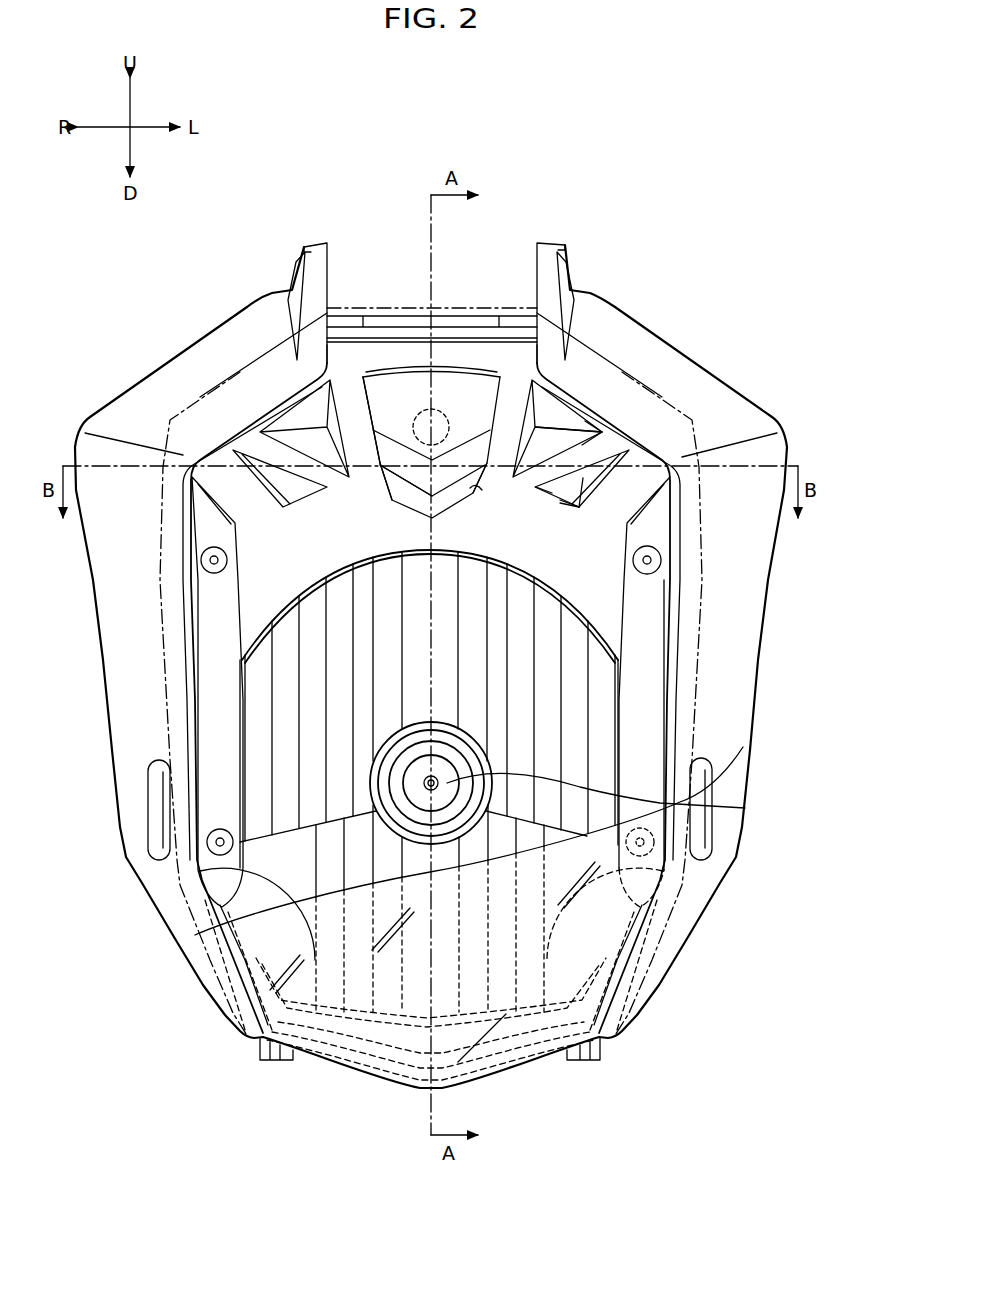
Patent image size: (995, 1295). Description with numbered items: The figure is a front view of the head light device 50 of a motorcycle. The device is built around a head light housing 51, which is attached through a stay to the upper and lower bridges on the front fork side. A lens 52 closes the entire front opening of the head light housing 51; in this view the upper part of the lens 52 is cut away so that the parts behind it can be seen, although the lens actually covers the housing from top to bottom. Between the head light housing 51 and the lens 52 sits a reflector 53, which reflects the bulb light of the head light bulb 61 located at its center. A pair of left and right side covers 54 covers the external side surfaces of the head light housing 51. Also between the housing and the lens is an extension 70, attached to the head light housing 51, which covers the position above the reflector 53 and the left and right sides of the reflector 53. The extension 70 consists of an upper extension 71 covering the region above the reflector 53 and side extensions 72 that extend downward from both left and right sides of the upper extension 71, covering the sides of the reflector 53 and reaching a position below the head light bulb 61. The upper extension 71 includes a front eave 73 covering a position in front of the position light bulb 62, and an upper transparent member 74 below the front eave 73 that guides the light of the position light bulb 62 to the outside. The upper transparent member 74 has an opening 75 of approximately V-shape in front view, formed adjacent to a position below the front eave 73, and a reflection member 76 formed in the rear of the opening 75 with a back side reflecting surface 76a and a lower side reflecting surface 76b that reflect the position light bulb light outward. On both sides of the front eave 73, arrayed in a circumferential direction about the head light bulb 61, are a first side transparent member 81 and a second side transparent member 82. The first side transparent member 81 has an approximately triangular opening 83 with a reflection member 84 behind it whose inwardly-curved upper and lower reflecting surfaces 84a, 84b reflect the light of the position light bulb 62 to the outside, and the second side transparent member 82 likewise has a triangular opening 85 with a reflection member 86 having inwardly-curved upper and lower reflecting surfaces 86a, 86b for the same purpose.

The head light device 50 is at (622, 232).
The head light housing 51 is at (523, 1010).
The lens 52 is at (200, 871).
The reflector 53 is at (520, 713).
The side cover 54 is at (127, 657).
The head light bulb 61 is at (745, 808).
The position light bulb 62 is at (445, 406).
The extension 70 is at (513, 363).
The upper extension 71 is at (360, 345).
The side extension 72 is at (217, 692).
The front eave 73 is at (400, 385).
The upper transparent member 74 is at (470, 443).
The opening 75 is at (476, 490).
The reflection member 76 is at (284, 578).
The back side reflecting surface 76a is at (390, 458).
The lower side reflecting surface 76b is at (390, 490).
The first side transparent member 81 is at (313, 415).
The second side transparent member 82 is at (247, 458).
The opening 83 is at (524, 455).
The reflection member 84 is at (817, 292).
The upper reflecting surface 84a is at (565, 440).
The lower reflecting surface 84b is at (608, 460).
The opening 85 is at (545, 483).
The reflection member 86 is at (817, 583).
The upper reflecting surface 86a is at (560, 482).
The lower reflecting surface 86b is at (585, 490).